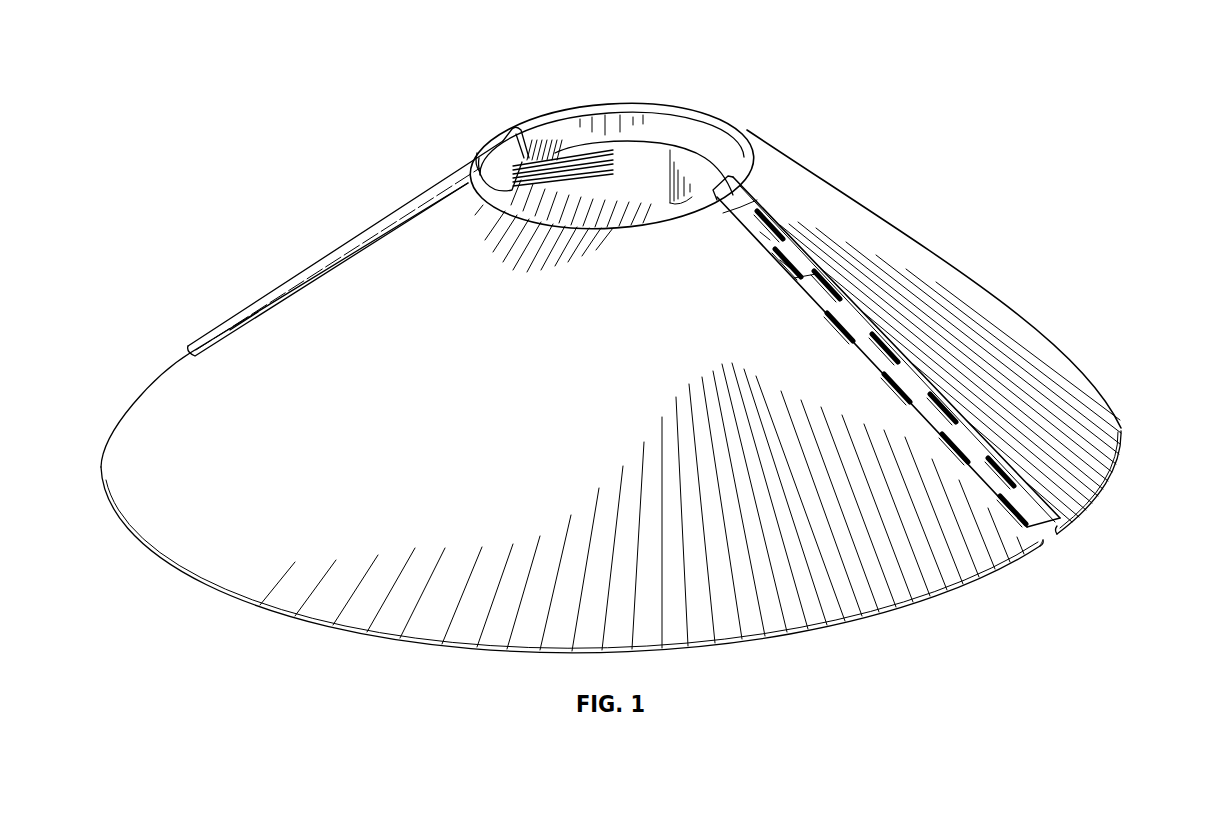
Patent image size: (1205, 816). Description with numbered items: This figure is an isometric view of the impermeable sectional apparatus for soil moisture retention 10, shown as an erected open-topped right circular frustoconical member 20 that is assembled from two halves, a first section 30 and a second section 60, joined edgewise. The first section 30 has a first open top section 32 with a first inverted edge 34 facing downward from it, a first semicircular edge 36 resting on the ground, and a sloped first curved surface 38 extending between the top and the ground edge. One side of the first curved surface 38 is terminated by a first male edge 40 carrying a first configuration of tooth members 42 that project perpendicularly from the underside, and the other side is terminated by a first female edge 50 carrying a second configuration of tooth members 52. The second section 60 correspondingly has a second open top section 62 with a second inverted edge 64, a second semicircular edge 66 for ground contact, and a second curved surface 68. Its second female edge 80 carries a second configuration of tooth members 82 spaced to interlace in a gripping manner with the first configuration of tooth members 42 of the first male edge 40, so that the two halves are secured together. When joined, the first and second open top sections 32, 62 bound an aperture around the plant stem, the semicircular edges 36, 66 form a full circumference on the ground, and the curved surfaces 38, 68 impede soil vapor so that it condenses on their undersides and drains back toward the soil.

The impermeable sectional apparatus for soil moisture retention 10 is at (1045, 101).
The frustoconical member 20 is at (989, 167).
The first section 30 is at (847, 200).
The first open top section 32 is at (700, 93).
The first inverted edge 34 is at (710, 142).
The first semicircular edge 36 is at (1113, 467).
The first curved surface 38 is at (798, 196).
The first male edge 40 is at (853, 303).
The first configuration of tooth members 42 is at (1037, 513).
The first female edge 50 is at (355, 247).
The second configuration of tooth members 52 is at (253, 302).
The second section 60 is at (193, 417).
The second open top section 62 is at (465, 172).
The second inverted edge 64 is at (477, 153).
The second semicircular edge 66 is at (293, 603).
The second curved surface 68 is at (361, 432).
The second female edge 80 is at (873, 367).
The second configuration of tooth members 82 is at (1030, 521).